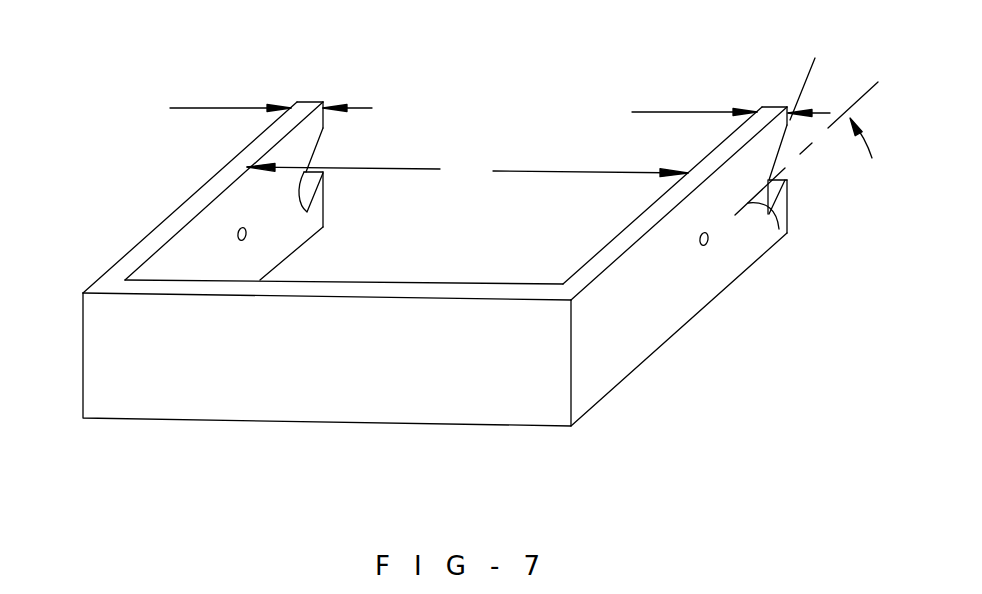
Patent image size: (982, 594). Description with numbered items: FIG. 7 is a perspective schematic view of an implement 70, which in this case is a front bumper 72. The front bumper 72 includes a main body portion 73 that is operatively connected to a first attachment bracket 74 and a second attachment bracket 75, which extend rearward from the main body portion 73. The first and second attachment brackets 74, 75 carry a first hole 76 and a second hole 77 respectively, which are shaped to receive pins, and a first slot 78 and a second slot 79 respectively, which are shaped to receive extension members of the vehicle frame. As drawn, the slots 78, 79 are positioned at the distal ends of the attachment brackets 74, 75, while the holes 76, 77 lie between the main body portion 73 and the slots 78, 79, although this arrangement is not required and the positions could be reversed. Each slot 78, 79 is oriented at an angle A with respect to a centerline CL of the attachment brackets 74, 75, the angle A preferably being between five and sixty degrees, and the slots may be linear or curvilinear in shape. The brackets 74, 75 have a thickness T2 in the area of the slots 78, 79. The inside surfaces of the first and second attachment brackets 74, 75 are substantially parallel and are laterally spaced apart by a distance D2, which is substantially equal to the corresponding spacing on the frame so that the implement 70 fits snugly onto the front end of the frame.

The implement 70 is at (150, 123).
The front bumper 72 is at (137, 173).
The main body portion 73 is at (323, 380).
The first attachment bracket 74 is at (608, 367).
The second attachment bracket 75 is at (245, 265).
The first hole 76 is at (709, 239).
The second hole 77 is at (247, 231).
The first slot 78 is at (773, 180).
The second slot 79 is at (312, 180).
The distance D2 is at (467, 173).
The thickness T2 is at (218, 106).
The angle A is at (800, 82).
The centerline CL is at (787, 233).